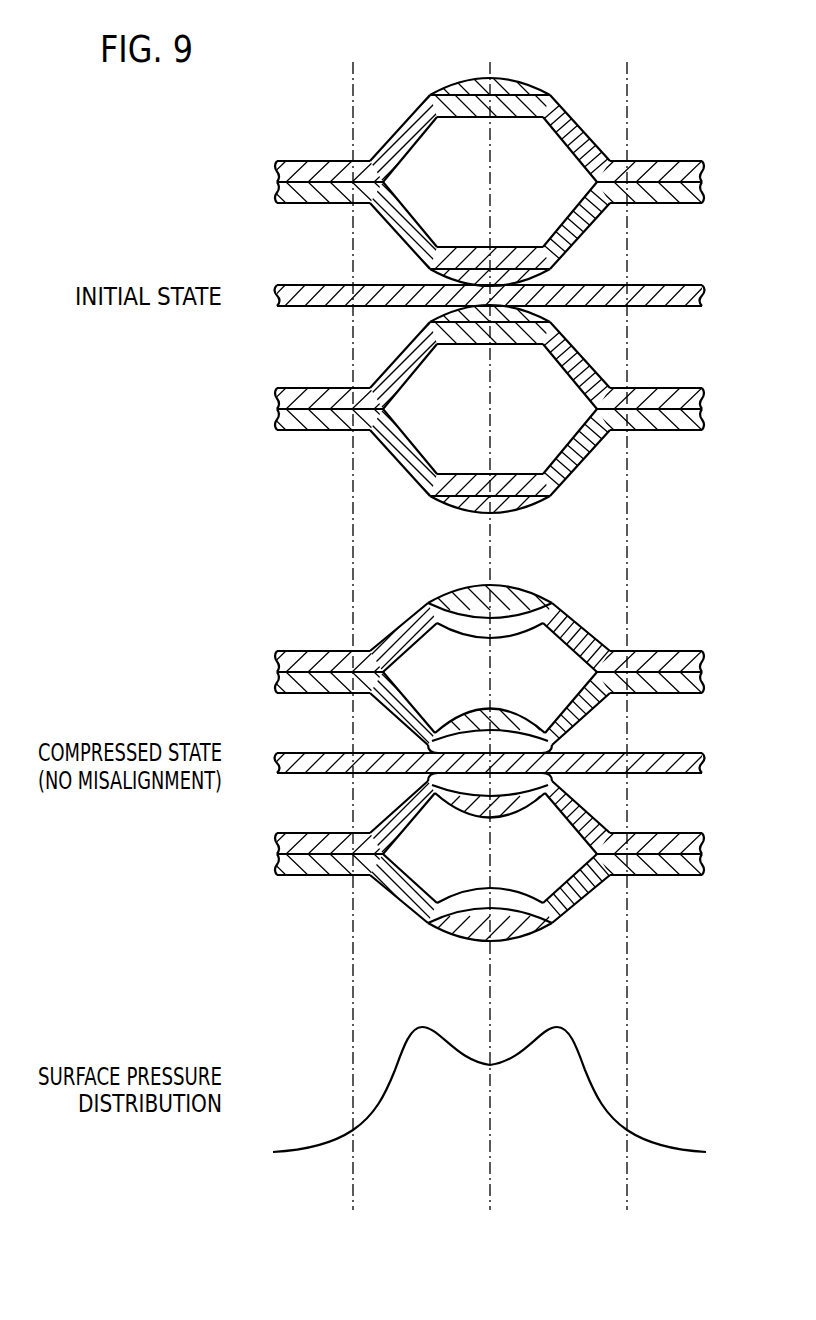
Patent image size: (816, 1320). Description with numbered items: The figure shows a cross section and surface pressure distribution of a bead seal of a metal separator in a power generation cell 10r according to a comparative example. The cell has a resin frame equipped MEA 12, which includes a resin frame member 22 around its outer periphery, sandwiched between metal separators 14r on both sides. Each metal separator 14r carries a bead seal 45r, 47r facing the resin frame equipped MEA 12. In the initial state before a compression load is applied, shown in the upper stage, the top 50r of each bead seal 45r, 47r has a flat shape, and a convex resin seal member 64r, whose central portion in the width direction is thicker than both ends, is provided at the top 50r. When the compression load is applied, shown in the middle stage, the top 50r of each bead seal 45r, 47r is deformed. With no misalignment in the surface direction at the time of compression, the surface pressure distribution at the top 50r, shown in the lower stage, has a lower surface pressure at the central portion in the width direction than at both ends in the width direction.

The power generation cell 10r is at (310, 116).
The resin frame equipped MEA 12 is at (316, 750).
The metal separator 14r is at (675, 832).
The resin frame member 22 is at (335, 773).
The bead seal 45r is at (591, 709).
The bead seal 47r is at (591, 822).
The top 50r is at (520, 786).
The convex resin seal member 64r is at (462, 782).